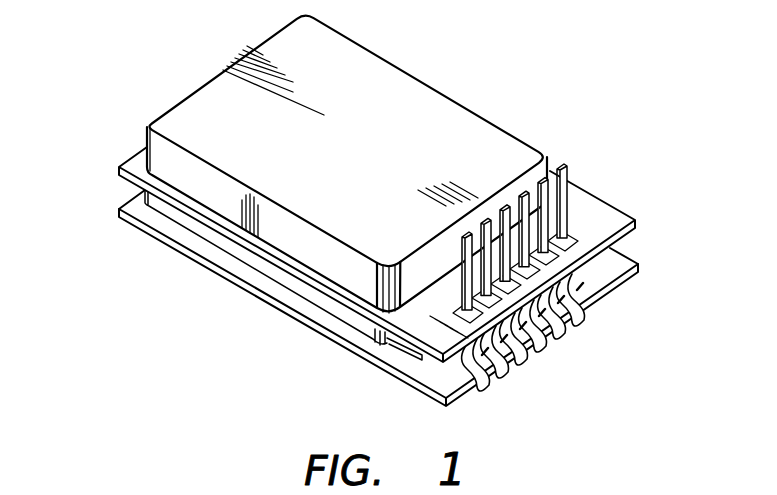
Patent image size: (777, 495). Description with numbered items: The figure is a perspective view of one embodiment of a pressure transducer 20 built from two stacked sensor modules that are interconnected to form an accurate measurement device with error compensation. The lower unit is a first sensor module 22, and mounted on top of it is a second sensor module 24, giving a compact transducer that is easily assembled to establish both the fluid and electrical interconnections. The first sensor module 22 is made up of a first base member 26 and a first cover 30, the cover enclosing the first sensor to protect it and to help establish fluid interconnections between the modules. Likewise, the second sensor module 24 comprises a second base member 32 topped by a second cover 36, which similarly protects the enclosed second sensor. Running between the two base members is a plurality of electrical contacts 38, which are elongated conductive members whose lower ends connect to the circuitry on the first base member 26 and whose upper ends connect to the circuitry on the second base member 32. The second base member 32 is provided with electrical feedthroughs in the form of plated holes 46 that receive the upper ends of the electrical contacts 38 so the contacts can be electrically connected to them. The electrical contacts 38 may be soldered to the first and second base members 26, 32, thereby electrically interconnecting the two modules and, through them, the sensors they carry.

The pressure transducer 20 is at (135, 98).
The first sensor module 22 is at (268, 316).
The second sensor module 24 is at (431, 73).
The first base member 26 is at (368, 364).
The first cover 30 is at (208, 232).
The second base member 32 is at (611, 203).
The second cover 36 is at (263, 42).
The electrical contacts 38 is at (546, 180).
The plated holes 46 is at (584, 240).